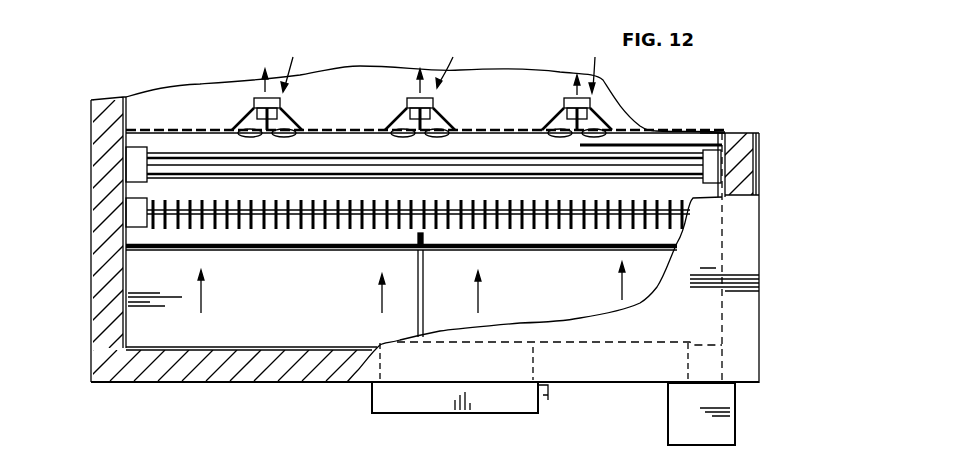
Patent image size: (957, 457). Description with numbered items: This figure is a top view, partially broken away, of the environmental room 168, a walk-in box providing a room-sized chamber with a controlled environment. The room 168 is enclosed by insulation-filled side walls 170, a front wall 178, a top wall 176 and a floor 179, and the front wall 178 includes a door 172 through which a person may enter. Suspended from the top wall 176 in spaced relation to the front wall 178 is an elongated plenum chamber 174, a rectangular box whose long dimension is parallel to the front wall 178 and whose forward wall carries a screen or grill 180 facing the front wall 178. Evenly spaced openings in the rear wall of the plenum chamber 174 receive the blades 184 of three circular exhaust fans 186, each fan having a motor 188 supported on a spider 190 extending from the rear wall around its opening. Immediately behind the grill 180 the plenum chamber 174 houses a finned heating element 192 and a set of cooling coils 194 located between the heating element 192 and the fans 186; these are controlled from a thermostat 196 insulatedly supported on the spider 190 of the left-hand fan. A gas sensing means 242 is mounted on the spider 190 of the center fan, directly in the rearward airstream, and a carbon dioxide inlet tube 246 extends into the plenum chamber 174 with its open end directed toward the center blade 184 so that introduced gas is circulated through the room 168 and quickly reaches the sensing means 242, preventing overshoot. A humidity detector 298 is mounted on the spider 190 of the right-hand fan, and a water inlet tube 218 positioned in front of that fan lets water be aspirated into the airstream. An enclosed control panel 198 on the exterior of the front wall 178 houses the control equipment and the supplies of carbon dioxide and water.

The room 168 is at (778, 298).
The side walls 170 is at (92, 190).
The door 172 is at (437, 404).
The plenum chamber 174 is at (287, 258).
The top wall 176 is at (745, 243).
The front wall 178 is at (268, 383).
The floor 179 is at (311, 328).
The screen or grill 180 is at (381, 250).
The blades 184 is at (280, 134).
The exhaust fans 186 is at (441, 64).
The motor 188 is at (262, 97).
The spider 190 is at (233, 127).
The heating element 192 is at (212, 228).
The cooling coils 194 is at (390, 178).
The thermostat 196 is at (258, 108).
The control panel 198 is at (668, 418).
The water inlet tube 218 is at (628, 144).
The gas sensing means 242 is at (410, 98).
The carbon dioxide inlet tube 246 is at (423, 293).
The humidity detector 298 is at (562, 104).